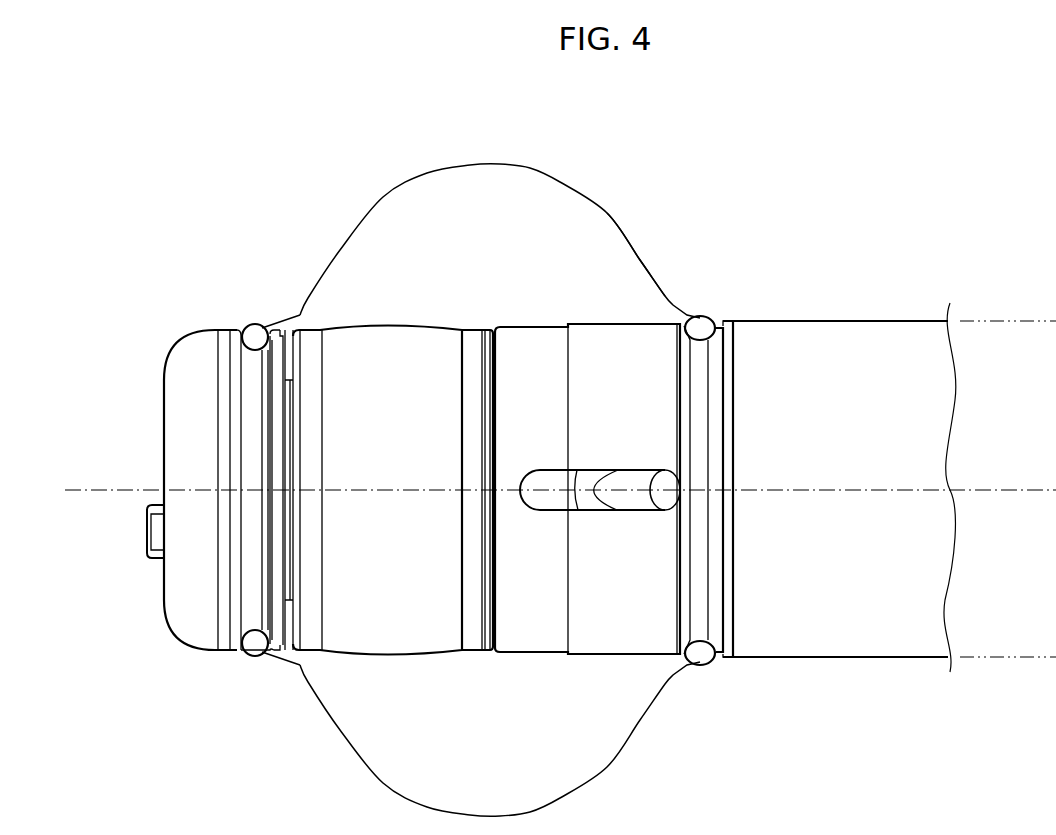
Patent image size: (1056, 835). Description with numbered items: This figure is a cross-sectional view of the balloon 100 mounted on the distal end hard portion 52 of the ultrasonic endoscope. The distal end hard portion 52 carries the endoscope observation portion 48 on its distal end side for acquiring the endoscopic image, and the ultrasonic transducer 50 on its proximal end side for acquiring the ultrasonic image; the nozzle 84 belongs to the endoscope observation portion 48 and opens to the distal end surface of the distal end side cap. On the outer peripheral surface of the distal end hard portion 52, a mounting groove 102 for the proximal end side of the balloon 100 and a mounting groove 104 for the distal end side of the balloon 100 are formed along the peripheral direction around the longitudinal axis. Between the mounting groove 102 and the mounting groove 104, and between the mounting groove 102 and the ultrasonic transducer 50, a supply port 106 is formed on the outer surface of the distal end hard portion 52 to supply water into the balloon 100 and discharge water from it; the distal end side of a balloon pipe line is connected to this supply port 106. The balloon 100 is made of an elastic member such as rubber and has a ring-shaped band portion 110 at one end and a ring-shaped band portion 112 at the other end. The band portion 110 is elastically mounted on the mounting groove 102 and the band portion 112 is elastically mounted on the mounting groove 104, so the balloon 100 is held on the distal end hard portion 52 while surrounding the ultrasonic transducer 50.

The endoscope observation portion 48 is at (183, 337).
The ultrasonic transducer 50 is at (393, 318).
The distal end hard portion 52 is at (662, 264).
The nozzle 84 is at (148, 538).
The balloon 100 is at (497, 165).
The mounting groove 102 is at (712, 640).
The mounting groove 104 is at (256, 592).
The supply port 106 is at (661, 489).
The band portion 110 is at (712, 318).
The band portion 112 is at (252, 325).